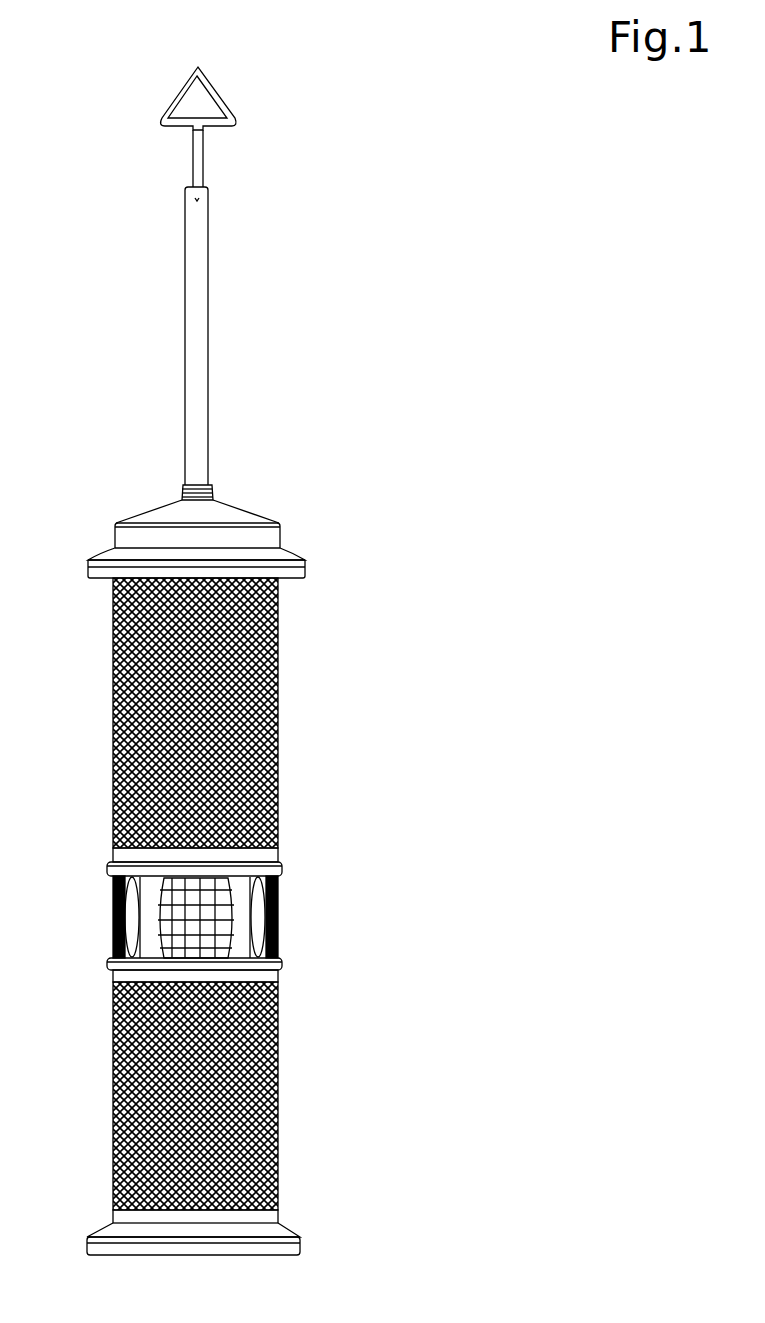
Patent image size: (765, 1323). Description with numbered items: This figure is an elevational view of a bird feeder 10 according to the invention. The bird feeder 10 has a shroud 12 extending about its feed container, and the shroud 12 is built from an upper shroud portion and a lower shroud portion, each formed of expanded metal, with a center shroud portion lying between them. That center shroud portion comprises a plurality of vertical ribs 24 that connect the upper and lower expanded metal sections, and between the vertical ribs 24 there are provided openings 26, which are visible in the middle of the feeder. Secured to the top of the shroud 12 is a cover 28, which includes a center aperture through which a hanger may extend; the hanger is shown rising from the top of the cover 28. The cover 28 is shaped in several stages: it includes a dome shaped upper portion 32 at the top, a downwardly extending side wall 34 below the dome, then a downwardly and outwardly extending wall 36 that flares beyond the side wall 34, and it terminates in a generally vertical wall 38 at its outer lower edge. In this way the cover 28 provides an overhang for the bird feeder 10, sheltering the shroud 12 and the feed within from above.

The bird feeder 10 is at (395, 472).
The shroud 12 is at (316, 738).
The vertical ribs 24 is at (112, 915).
The openings 26 is at (112, 928).
The cover 28 is at (135, 495).
The dome shaped upper portion 32 is at (228, 510).
The downwardly extending side wall 34 is at (277, 538).
The downwardly and outwardly extending wall 36 is at (288, 556).
The generally vertical wall 38 is at (302, 573).